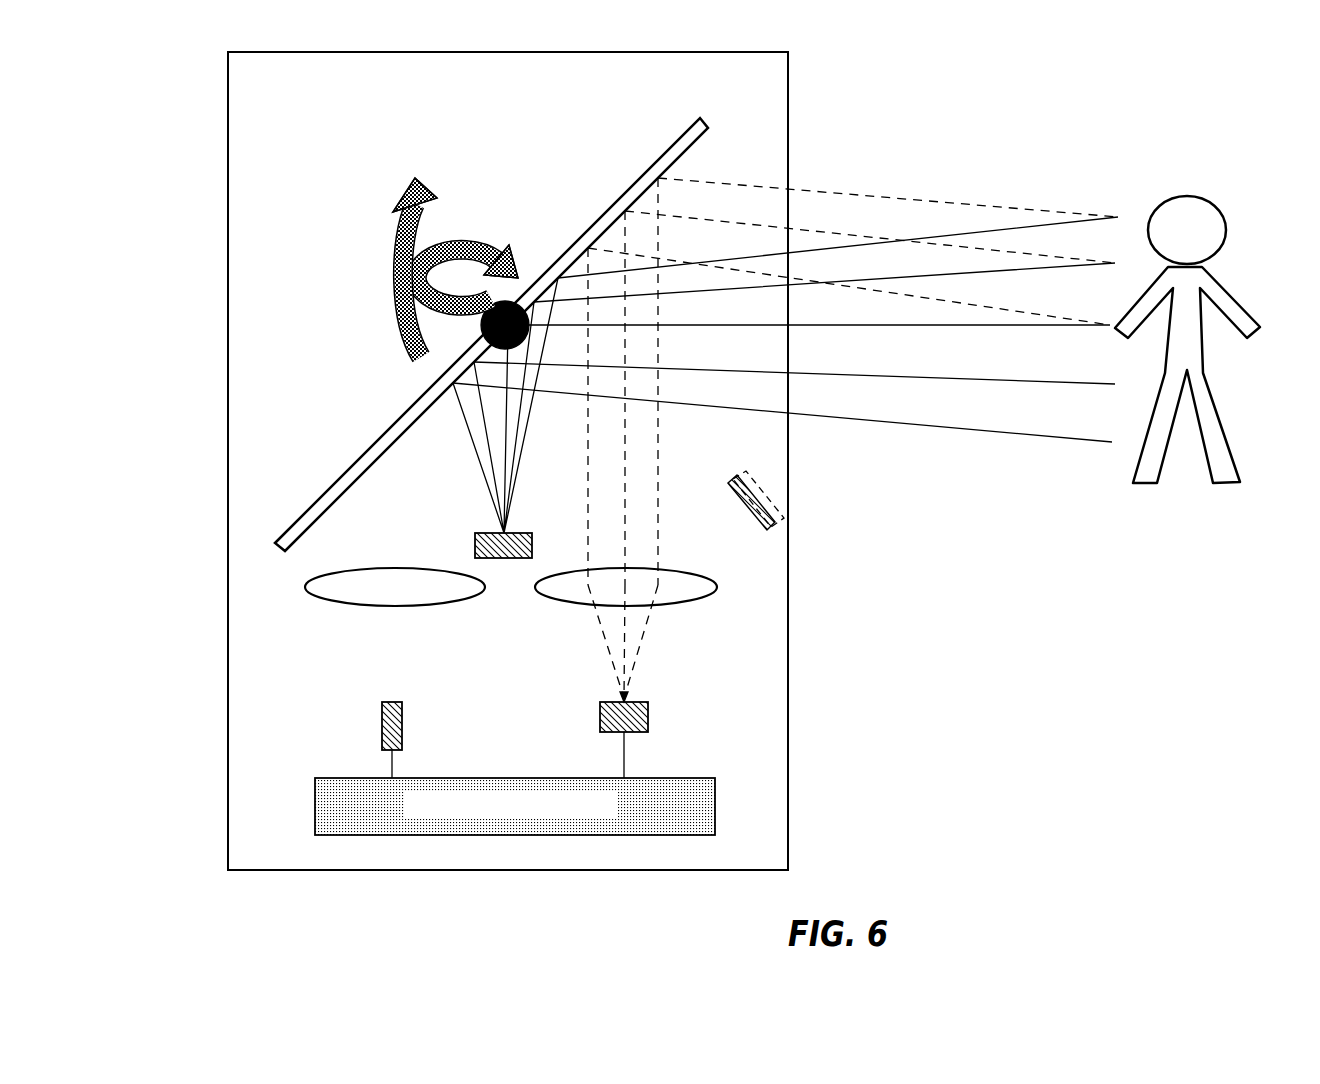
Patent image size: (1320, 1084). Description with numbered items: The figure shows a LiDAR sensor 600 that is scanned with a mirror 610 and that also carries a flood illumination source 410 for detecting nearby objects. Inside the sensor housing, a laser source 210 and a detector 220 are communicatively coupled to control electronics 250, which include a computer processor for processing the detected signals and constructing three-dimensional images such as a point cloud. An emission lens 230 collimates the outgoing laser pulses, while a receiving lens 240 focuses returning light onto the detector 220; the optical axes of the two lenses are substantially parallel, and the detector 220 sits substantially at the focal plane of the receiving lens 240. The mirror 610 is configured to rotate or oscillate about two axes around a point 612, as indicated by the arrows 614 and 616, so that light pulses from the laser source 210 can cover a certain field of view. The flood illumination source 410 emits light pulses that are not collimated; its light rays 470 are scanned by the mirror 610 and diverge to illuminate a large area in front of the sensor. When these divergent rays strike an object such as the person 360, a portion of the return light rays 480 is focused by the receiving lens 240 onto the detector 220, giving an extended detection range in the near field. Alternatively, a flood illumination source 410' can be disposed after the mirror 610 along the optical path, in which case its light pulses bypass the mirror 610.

The LiDAR sensor 600 is at (228, 195).
The mirror 610 is at (328, 490).
The point 612 is at (478, 340).
The arrow 614 is at (412, 298).
The arrow 616 is at (412, 218).
The light rays 470 is at (965, 430).
The return light rays 480 is at (932, 205).
The flood illumination source 410 is at (503, 584).
The flood illumination source 410' is at (756, 538).
The emission lens 230 is at (312, 598).
The receiving lens 240 is at (687, 605).
The laser source 210 is at (380, 722).
The detector 220 is at (648, 718).
The control electronics 250 is at (315, 805).
The person 360 is at (1185, 195).